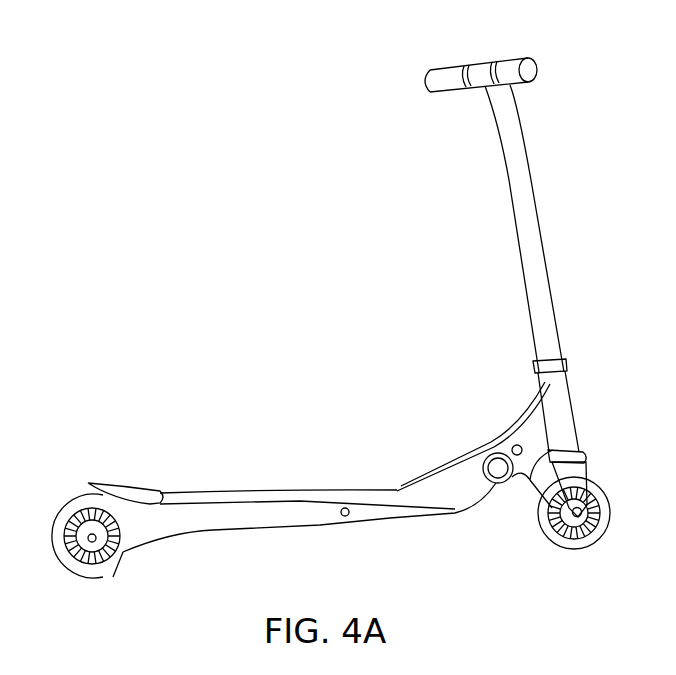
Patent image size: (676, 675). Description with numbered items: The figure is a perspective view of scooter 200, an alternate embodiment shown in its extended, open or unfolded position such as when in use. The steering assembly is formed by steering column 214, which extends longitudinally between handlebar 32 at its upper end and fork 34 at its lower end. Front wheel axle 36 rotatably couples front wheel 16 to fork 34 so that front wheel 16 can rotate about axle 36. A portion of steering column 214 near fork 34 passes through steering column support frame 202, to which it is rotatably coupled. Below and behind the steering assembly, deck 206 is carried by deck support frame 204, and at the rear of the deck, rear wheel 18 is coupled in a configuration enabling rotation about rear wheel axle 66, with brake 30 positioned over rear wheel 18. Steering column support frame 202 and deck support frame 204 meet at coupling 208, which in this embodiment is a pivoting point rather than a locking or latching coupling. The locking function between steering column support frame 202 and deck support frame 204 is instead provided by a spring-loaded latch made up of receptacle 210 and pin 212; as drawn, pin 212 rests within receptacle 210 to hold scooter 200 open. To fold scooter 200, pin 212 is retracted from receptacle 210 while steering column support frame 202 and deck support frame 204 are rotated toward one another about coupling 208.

The scooter 200 is at (248, 236).
The handlebar 32 is at (442, 70).
The steering column 214 is at (532, 177).
The steering column support frame 202 is at (567, 381).
The fork 34 is at (588, 458).
The front wheel 16 is at (600, 535).
The front wheel axle 36 is at (576, 519).
The coupling 208 is at (513, 445).
The pin 212 is at (490, 445).
The receptacle 210 is at (503, 485).
The deck 206 is at (212, 445).
The deck support frame 204 is at (445, 488).
The brake 30 is at (145, 490).
The rear wheel 18 is at (78, 575).
The rear wheel axle 66 is at (97, 545).